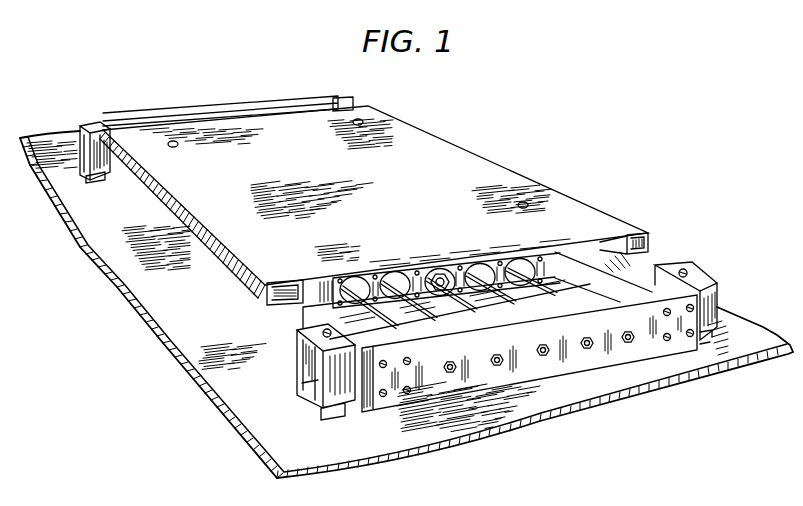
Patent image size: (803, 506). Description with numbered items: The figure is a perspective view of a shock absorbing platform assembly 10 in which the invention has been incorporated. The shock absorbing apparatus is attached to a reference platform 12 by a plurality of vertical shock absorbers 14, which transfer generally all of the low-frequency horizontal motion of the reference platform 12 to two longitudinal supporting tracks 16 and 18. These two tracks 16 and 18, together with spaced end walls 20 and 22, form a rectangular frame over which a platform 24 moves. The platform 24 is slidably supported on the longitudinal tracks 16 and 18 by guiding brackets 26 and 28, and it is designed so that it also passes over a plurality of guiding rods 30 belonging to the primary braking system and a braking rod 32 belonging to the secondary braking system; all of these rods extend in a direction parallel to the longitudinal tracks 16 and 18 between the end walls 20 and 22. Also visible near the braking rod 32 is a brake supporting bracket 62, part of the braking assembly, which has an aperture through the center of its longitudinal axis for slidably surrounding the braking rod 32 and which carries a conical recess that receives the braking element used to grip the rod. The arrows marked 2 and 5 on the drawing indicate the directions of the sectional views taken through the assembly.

The section line 2- 2 is at (213, 73).
The section line 5- 5 is at (203, 102).
The shock absorbing platform assembly 10 is at (550, 156).
The reference platform 12 is at (752, 350).
The vertical shock absorbers 14 is at (291, 380).
The longitudinal supporting track 16 is at (303, 308).
The longitudinal supporting track 18 is at (613, 277).
The end wall 20 is at (390, 408).
The end wall 22 is at (115, 113).
The platform 24 is at (630, 228).
The guiding bracket 26 is at (303, 278).
The guiding bracket 28 is at (560, 255).
The guiding rods 30 is at (370, 302).
The braking rod 32 is at (440, 274).
The brake supporting bracket 62 is at (420, 278).